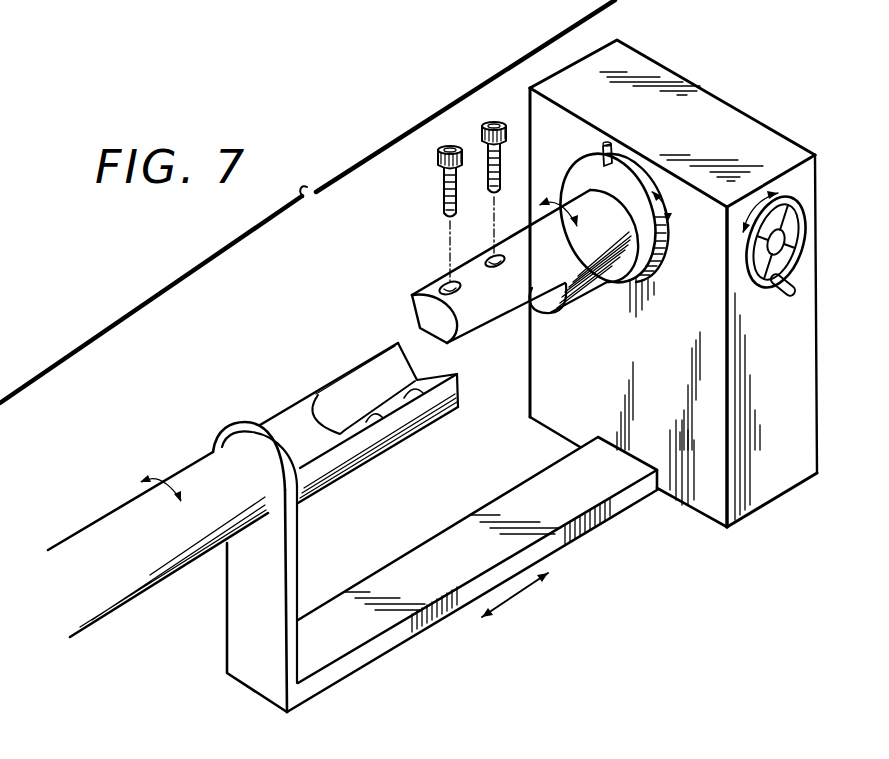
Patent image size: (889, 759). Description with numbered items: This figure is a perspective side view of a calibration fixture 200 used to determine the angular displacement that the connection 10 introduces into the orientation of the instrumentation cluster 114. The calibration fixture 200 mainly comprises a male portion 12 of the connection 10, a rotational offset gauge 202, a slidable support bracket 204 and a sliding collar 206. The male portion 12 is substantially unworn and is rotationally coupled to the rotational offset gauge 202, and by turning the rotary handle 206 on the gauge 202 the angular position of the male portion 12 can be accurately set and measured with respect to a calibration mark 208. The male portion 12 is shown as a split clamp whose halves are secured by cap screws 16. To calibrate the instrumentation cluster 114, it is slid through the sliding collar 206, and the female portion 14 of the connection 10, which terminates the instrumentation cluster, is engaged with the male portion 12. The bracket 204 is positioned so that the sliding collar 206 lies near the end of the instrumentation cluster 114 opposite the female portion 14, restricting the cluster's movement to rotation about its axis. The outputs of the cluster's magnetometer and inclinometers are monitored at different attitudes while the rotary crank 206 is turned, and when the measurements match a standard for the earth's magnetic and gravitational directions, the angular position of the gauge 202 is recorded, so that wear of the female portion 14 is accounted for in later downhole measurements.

The connection 10 is at (372, 305).
The male portion 12 is at (420, 273).
The female portion 14 is at (333, 357).
The cap screws 16 is at (492, 125).
The instrumentation cluster 114 is at (112, 517).
The calibration fixture 200 is at (653, 567).
The rotational offset gauge 202 is at (770, 503).
The slidable support bracket 204 is at (430, 627).
The sliding collar 206 is at (240, 423).
The calibration mark 208 is at (613, 157).